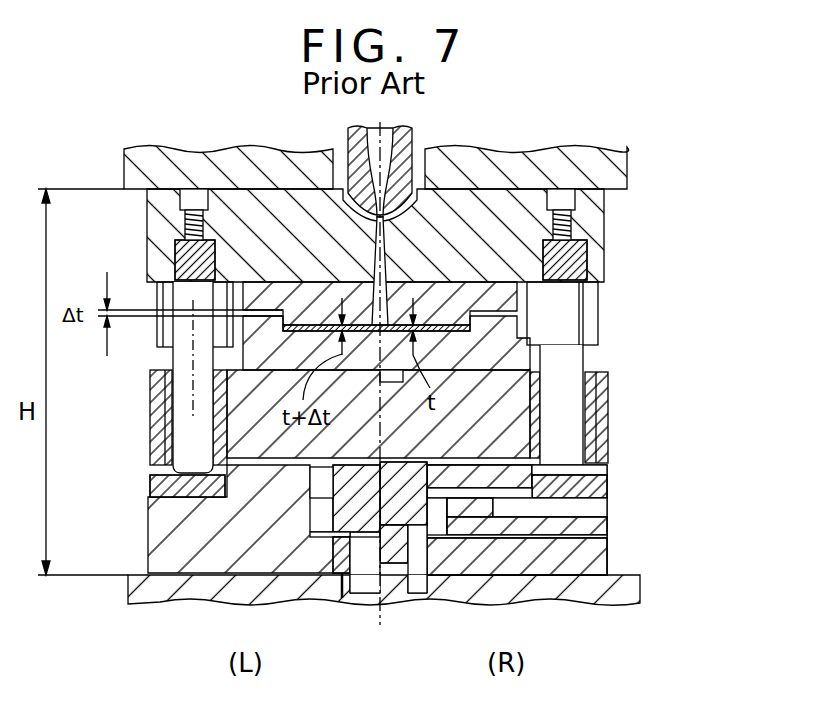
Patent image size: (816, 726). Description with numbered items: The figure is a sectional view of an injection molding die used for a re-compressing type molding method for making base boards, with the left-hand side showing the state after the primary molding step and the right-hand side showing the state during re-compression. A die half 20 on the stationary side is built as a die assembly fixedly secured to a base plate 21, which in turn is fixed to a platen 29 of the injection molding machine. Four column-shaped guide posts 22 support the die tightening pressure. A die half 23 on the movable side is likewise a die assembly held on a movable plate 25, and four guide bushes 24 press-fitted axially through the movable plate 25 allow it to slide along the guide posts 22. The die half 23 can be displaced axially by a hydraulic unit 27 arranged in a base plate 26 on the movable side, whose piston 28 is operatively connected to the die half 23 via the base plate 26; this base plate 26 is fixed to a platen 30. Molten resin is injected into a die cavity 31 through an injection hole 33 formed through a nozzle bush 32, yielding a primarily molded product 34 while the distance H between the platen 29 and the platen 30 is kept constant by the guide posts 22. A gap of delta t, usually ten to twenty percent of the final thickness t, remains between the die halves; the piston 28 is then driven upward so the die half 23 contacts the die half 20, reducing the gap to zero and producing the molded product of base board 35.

The die half on the stationary side 20 is at (520, 300).
The base plate 21 is at (585, 240).
The guide posts 22 is at (584, 326).
The die half on the movable side 23 is at (512, 357).
The guide bushes 24 is at (590, 415).
The movable plate 25 is at (600, 448).
The base plate on the movable side 26 is at (598, 562).
The hydraulic unit 27 is at (337, 580).
The piston 28 is at (418, 540).
The platen 29 is at (606, 183).
The platen 30 is at (622, 593).
The die cavity 31 is at (305, 324).
The nozzle bush 32 is at (342, 198).
The injection hole 33 is at (388, 235).
The primarily molded product 34 is at (200, 330).
The molded product of base board 35 is at (445, 325).